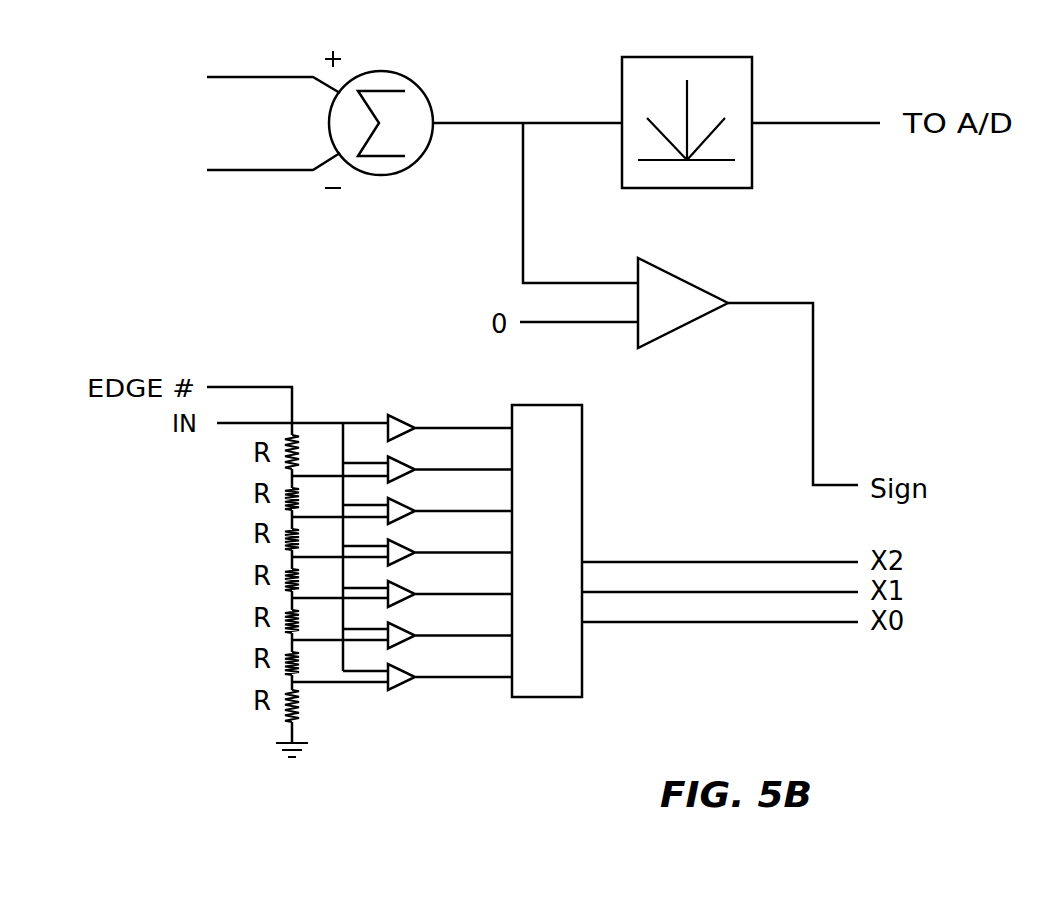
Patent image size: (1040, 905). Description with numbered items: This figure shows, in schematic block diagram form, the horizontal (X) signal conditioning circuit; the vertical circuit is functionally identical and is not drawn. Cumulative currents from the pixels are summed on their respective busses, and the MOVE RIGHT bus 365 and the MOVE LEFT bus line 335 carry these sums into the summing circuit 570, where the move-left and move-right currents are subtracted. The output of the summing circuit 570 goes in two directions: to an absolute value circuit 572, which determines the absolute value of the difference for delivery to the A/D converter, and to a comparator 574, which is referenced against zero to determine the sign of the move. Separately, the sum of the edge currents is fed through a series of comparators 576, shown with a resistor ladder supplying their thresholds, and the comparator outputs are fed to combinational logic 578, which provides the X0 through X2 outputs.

The MOVE RIGHT bus 365 is at (262, 77).
The MOVE LEFT bus line 335 is at (262, 170).
The summing circuit 570 is at (400, 172).
The absolute value circuit 572 is at (687, 188).
The comparator 574 is at (673, 335).
The series of comparators 576 is at (405, 417).
The combinational logic 578 is at (538, 697).